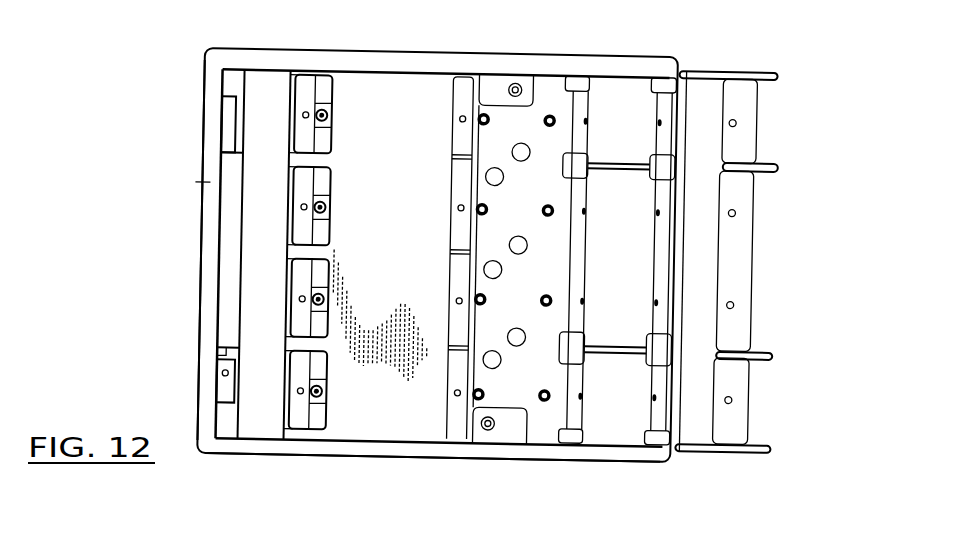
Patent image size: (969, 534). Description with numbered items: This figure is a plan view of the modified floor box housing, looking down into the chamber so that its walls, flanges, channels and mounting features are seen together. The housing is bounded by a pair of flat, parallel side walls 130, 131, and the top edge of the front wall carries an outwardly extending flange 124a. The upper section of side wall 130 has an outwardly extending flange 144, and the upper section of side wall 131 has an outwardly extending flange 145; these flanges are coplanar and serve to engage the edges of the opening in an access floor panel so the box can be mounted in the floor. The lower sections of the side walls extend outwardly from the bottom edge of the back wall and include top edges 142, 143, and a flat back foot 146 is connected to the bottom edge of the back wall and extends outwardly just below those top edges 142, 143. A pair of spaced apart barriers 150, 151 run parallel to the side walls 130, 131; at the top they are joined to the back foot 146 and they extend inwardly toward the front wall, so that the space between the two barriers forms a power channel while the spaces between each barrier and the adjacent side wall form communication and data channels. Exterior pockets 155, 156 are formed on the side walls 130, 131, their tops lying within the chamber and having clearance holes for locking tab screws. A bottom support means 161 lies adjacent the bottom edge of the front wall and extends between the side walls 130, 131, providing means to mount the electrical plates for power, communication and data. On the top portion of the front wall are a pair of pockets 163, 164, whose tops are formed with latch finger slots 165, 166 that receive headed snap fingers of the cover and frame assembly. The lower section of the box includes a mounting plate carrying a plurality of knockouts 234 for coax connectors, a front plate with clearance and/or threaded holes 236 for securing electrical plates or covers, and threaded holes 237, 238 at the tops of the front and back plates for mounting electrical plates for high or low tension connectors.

The outwardly extending flange 124a is at (210, 182).
The side wall 130 is at (412, 75).
The side wall 131 is at (410, 438).
The top edge 142 is at (742, 70).
The top edge 143 is at (747, 453).
The outwardly extending flange 144 is at (545, 63).
The outwardly extending flange 145 is at (347, 447).
The back foot 146 is at (730, 105).
The barrier 150 is at (755, 350).
The barrier 151 is at (778, 166).
The exterior pocket 155 is at (508, 98).
The exterior pocket 156 is at (512, 417).
The bottom support means 161 is at (583, 190).
The pocket 163 is at (240, 110).
The pocket 164 is at (230, 397).
The latch finger slot 165 is at (227, 124).
The latch finger slot 166 is at (225, 377).
The knockouts 234 is at (501, 268).
The clearance and/or threaded holes 236 is at (326, 205).
The threaded holes 237 is at (305, 202).
The threaded holes 238 is at (385, 265).